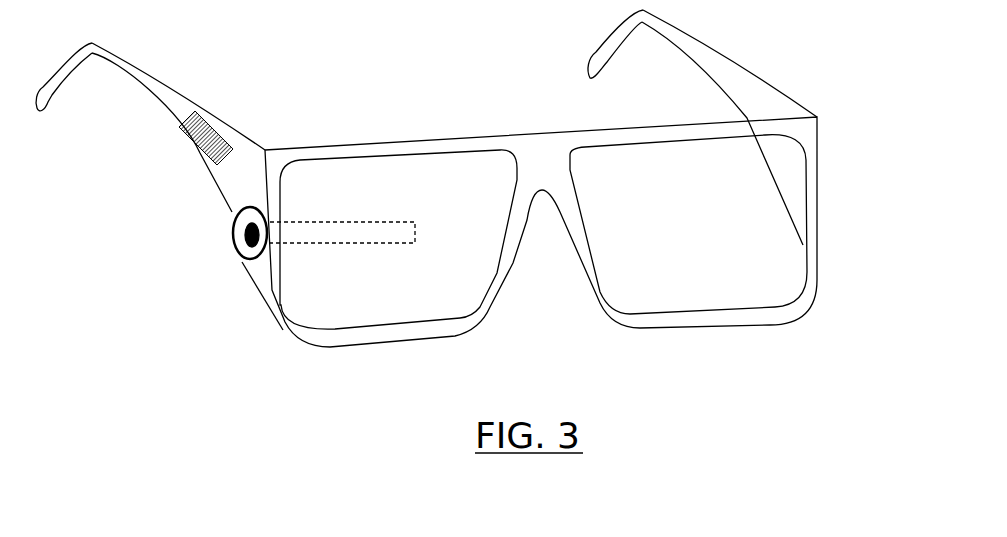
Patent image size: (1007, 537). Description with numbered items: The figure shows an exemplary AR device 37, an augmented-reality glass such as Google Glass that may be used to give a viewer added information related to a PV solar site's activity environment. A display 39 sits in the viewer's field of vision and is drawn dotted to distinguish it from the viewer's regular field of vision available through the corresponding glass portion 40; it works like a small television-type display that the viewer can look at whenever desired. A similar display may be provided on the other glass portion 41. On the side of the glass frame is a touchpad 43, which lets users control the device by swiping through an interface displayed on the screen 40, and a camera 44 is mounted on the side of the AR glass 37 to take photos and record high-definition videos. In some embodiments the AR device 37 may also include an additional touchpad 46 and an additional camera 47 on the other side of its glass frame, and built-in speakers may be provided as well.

The AR device 37 is at (134, 378).
The display 39 is at (431, 233).
The glass portion 40 is at (402, 305).
The other glass portion 41 is at (697, 290).
The touchpad 43 is at (157, 136).
The camera 44 is at (213, 238).
The additional touchpad 46 is at (764, 57).
The additional camera 47 is at (836, 215).